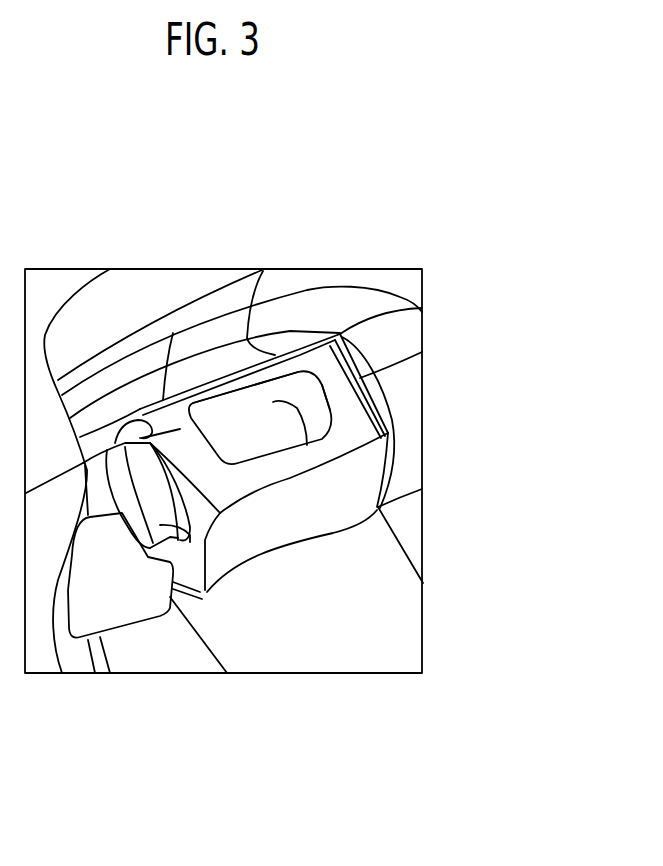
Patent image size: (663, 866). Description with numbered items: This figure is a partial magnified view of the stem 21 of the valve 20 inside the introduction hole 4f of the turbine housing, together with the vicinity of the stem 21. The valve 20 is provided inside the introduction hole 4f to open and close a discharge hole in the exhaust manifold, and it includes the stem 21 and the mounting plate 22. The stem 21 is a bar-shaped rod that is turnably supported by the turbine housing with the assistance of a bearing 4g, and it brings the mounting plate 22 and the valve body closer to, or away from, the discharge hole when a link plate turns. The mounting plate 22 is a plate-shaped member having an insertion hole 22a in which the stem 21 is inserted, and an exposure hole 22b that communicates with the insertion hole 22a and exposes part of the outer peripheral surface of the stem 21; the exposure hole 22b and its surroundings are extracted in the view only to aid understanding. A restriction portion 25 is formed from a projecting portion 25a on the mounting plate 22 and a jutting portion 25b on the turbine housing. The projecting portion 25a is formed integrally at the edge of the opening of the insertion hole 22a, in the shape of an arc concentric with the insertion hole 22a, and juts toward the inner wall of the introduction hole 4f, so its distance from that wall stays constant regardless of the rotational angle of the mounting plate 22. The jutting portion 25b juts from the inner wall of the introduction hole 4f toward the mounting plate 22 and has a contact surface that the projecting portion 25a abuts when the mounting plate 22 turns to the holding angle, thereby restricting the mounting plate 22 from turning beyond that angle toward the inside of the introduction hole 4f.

The introduction hole 4f is at (112, 290).
The bearing 4g is at (410, 463).
The valve 20 is at (282, 382).
The stem 21 is at (277, 400).
The mounting plate 22 is at (278, 428).
The insertion hole 22a is at (390, 417).
The exposure hole 22b is at (237, 393).
The restriction portion 25 is at (159, 619).
The projecting portion 25a is at (206, 600).
The jutting portion 25b is at (123, 577).